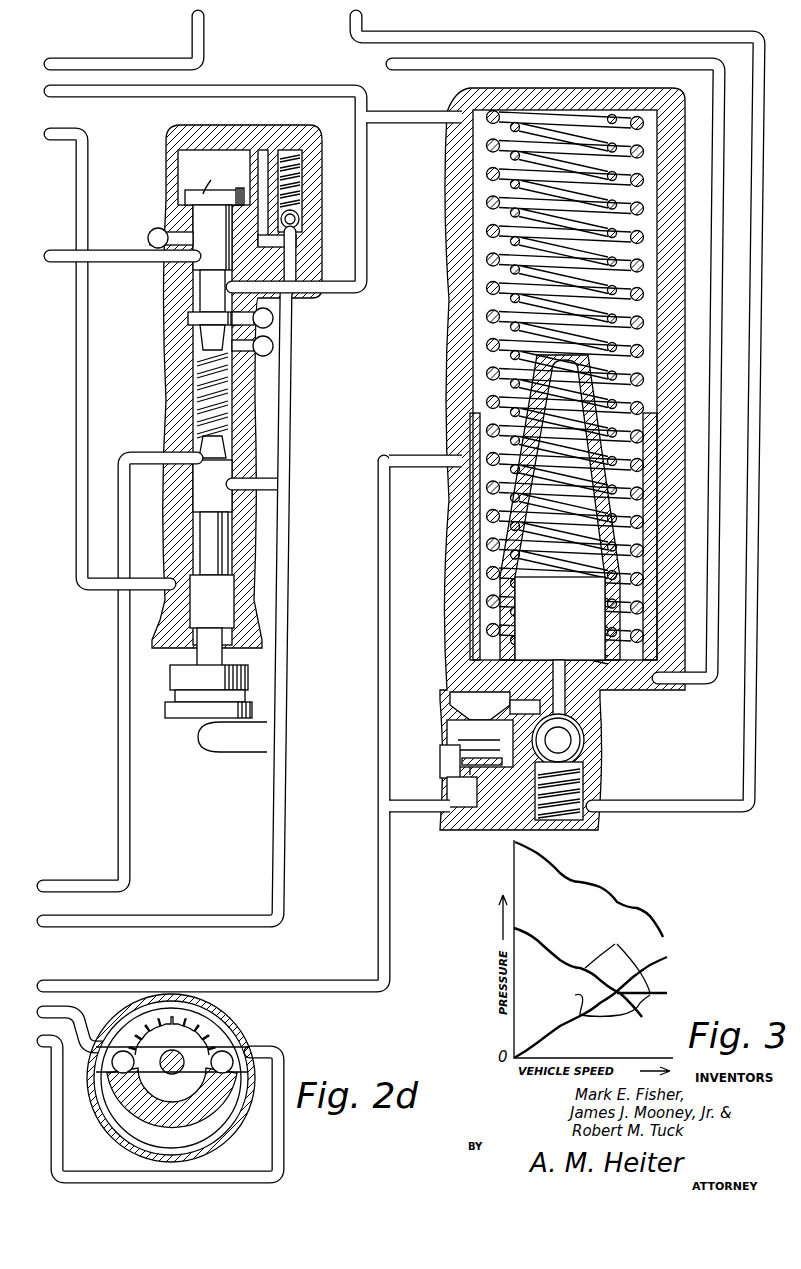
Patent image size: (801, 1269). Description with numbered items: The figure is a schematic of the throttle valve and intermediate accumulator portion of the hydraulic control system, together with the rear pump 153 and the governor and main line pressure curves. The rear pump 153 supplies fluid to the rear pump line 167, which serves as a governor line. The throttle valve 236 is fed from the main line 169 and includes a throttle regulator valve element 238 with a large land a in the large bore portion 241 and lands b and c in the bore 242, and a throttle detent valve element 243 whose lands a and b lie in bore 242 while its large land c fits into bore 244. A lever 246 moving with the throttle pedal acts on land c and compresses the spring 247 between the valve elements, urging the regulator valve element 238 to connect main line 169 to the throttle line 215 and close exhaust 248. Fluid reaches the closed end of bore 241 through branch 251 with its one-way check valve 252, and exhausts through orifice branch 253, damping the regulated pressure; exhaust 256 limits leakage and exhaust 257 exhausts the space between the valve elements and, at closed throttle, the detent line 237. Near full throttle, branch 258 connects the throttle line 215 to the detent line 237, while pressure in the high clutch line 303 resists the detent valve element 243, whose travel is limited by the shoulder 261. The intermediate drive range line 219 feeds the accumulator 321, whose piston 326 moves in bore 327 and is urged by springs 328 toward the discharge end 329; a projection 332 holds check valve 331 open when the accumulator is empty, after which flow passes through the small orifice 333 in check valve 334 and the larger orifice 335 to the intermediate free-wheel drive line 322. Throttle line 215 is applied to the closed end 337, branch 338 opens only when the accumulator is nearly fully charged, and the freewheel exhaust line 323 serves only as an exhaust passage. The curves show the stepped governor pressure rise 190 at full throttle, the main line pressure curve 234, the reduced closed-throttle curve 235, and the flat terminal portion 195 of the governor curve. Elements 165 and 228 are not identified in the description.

In FIG. 2D, the rear pump 153 is at (232, 1052).
In FIG. 2D, the pipe 165 is at (48, 1048).
In FIG. 2D, the rear pump line 167 is at (40, 1005).
In FIG. 2D, the main line 169 is at (62, 258).
In FIG. 3, the stepped pressure rise curve 190 is at (590, 1007).
In FIG. 3, the governor curve terminal portion 195 is at (648, 1000).
In FIG. 2D, the throttle line 215 is at (72, 92).
In FIG. 2D, the intermediate drive range line 219 is at (62, 985).
In FIG. 2D, the pipe 228 is at (153, 62).
In FIG. 3, the main line pressure curve 234 is at (620, 905).
In FIG. 3, the closed throttle pressure curve 235 is at (582, 972).
In FIG. 2D, the throttle valve 236 is at (166, 396).
In FIG. 2D, the detent line 237 is at (150, 455).
In FIG. 2D, the throttle regulator valve element 238 is at (203, 262).
In FIG. 2D, the large bore portion 241 is at (190, 175).
In FIG. 2D, the bore 242 is at (192, 306).
In FIG. 2D, the throttle detent valve element 243 is at (205, 545).
In FIG. 2D, the bore 244 is at (185, 640).
In FIG. 2D, the lever 246 is at (247, 740).
In FIG. 2D, the spring 247 is at (232, 402).
In FIG. 2D, the exhaust 248 is at (273, 322).
In FIG. 2D, the branch 251 is at (292, 230).
In FIG. 2D, the one-way check valve 252 is at (299, 218).
In FIG. 2D, the orifice branch 253 is at (270, 258).
In FIG. 2D, the exhaust 256 is at (155, 228).
In FIG. 2D, the exhaust 257 is at (265, 357).
In FIG. 2D, the branch 258 is at (282, 485).
In FIG. 2D, the shoulder 261 is at (193, 708).
In FIG. 2D, the high clutch line 303 is at (62, 135).
In FIG. 2D, the accumulator 321 is at (436, 359).
In FIG. 2D, the intermediate free-wheel drive line 322 is at (392, 64).
In FIG. 2D, the freewheel exhaust line 323 is at (352, 32).
In FIG. 2D, the piston 326 is at (463, 625).
In FIG. 2D, the bore 327 is at (470, 310).
In FIG. 2D, the springs 328 is at (483, 258).
In FIG. 2D, the discharge end 329 is at (600, 690).
In FIG. 2D, the check valve 331 is at (565, 740).
In FIG. 2D, the projection 332 is at (563, 700).
In FIG. 2D, the small orifice 333 is at (478, 765).
In FIG. 2D, the check valve 334 is at (447, 755).
In FIG. 2D, the larger orifice 335 is at (455, 700).
In FIG. 2D, the closed end 337 is at (483, 185).
In FIG. 2D, the branch 338 is at (424, 456).